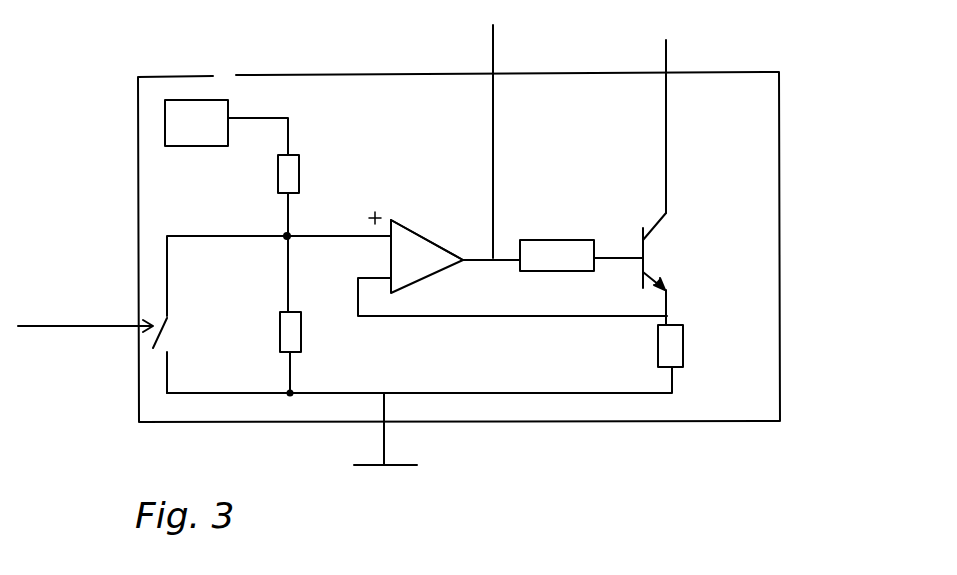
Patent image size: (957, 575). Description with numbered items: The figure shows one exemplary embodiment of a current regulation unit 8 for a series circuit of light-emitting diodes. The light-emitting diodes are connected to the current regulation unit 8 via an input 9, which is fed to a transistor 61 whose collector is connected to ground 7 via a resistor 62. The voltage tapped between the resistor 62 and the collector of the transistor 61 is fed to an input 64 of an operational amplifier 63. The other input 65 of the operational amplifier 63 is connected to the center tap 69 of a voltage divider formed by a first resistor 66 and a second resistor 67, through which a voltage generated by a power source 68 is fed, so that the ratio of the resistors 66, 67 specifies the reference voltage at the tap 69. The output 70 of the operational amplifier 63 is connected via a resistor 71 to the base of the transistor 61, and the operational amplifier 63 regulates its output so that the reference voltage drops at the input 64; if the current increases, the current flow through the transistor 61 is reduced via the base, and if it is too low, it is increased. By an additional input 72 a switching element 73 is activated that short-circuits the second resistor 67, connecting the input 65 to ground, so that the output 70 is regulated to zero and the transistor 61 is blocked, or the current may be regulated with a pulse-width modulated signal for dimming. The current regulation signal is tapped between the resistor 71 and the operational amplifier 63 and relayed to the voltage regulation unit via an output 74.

The ground 7 is at (398, 470).
The current regulation unit 8 is at (737, 460).
The input 9 is at (666, 58).
The transistor 61 is at (680, 257).
The resistor 62 is at (683, 347).
The operational amplifier 63 is at (456, 252).
The input 64 is at (388, 276).
The input 65 is at (392, 220).
The first resistor 66 is at (299, 170).
The second resistor 67 is at (280, 329).
The power source 68 is at (182, 122).
The center tap 69 is at (283, 233).
The output 70 is at (465, 258).
The resistor 71 is at (558, 240).
The additional input 72 is at (107, 325).
The switching element 73 is at (171, 336).
The output 74 is at (493, 52).